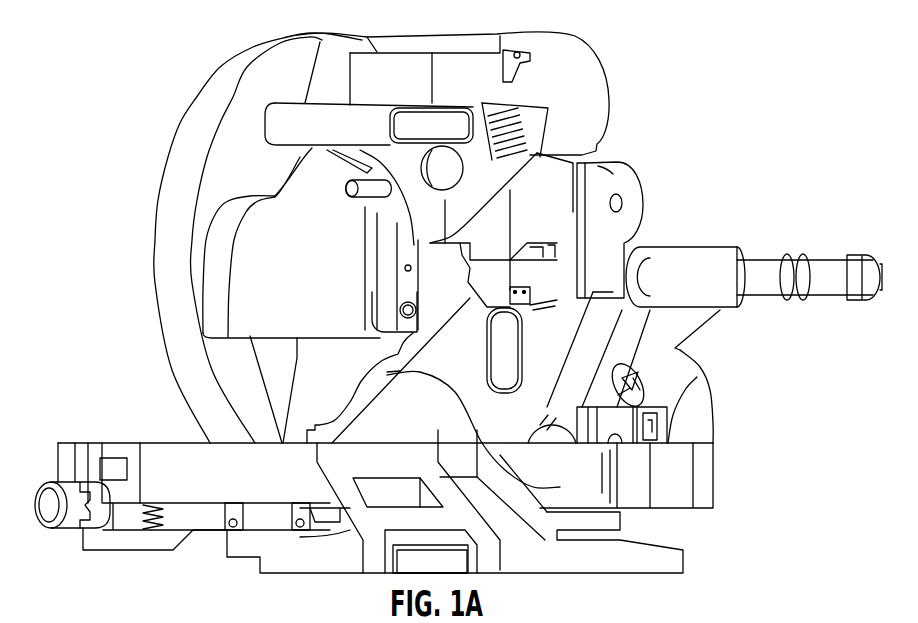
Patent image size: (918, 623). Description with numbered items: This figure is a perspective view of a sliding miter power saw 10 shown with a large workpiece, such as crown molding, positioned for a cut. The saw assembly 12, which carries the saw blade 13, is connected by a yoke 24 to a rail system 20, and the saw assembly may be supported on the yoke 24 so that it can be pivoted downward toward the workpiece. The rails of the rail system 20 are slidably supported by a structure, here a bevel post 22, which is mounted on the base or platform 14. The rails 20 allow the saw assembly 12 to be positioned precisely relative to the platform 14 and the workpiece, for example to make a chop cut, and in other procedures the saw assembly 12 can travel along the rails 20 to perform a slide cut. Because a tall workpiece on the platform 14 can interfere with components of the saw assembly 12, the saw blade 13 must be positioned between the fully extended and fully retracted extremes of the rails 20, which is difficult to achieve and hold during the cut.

The sliding miter power saw 10 is at (640, 92).
The saw assembly 12 is at (198, 98).
The saw blade 13 is at (318, 357).
The base or platform 14 is at (110, 443).
The rail system 20 is at (772, 267).
The bevel post 22 is at (727, 305).
The yoke 24 is at (618, 176).